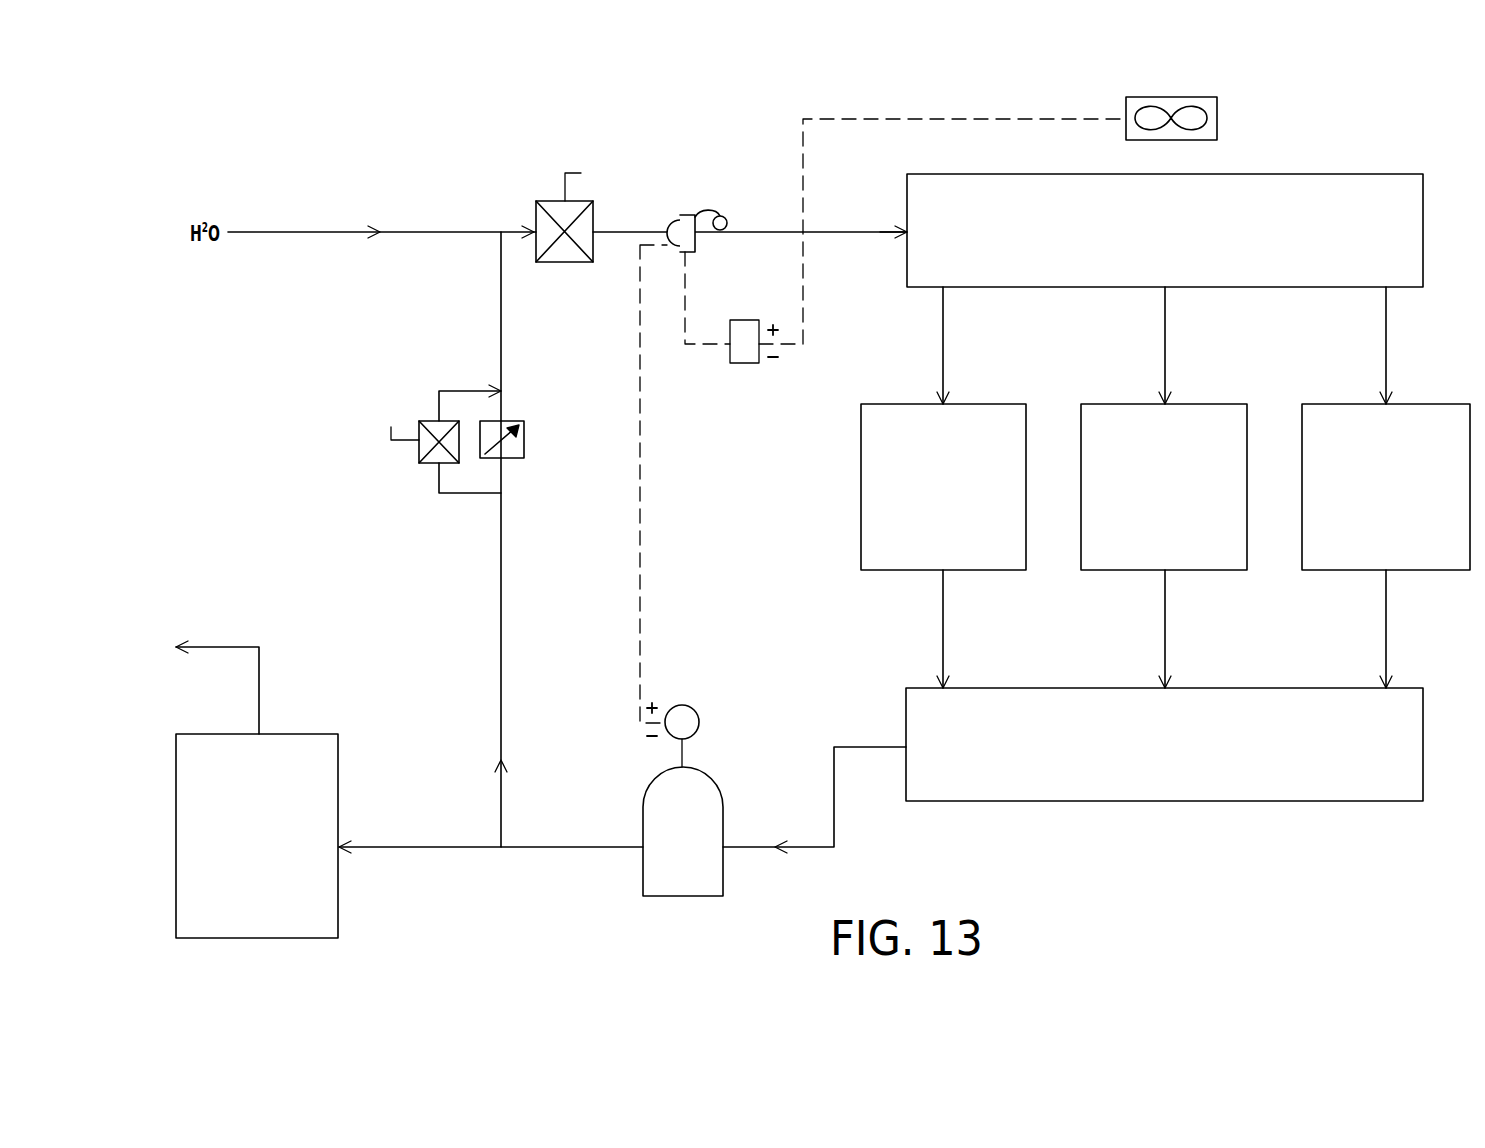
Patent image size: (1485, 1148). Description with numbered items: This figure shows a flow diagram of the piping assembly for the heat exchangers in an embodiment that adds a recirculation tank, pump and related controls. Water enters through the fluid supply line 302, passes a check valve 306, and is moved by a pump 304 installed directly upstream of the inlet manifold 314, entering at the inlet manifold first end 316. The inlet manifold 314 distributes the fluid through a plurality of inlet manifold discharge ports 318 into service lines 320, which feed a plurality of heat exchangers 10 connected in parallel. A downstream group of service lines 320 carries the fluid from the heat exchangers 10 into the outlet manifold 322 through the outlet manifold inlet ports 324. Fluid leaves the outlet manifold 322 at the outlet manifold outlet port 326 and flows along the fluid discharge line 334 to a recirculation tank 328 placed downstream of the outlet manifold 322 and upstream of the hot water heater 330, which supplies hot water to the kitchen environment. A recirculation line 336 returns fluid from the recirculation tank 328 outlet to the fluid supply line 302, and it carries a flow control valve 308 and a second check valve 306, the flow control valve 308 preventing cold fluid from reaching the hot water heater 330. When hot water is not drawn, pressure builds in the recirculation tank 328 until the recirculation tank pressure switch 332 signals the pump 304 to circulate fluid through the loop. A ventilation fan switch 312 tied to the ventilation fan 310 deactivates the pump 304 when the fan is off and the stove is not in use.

The heat exchanger 10 is at (861, 490).
The fluid supply line 302 is at (418, 232).
The pump 304 is at (682, 215).
The check valve 306 is at (582, 201).
The flow control valve 308 is at (574, 412).
The ventilation fan 310 is at (1218, 115).
The ventilation fan switch 312 is at (744, 363).
The inlet manifold 314 is at (1373, 174).
The inlet manifold first end 316 is at (905, 236).
The inlet manifold discharge port 318 is at (943, 290).
The service line 320 is at (943, 335).
The outlet manifold 322 is at (1285, 801).
The outlet manifold inlet port 324 is at (948, 686).
The outlet manifold outlet port 326 is at (906, 745).
The recirculation tank 328 is at (643, 873).
The hot water heater 330 is at (327, 734).
The recirculation tank pressure switch 332 is at (685, 705).
The fluid discharge line 334 is at (834, 820).
The recirculation line 336 is at (501, 562).